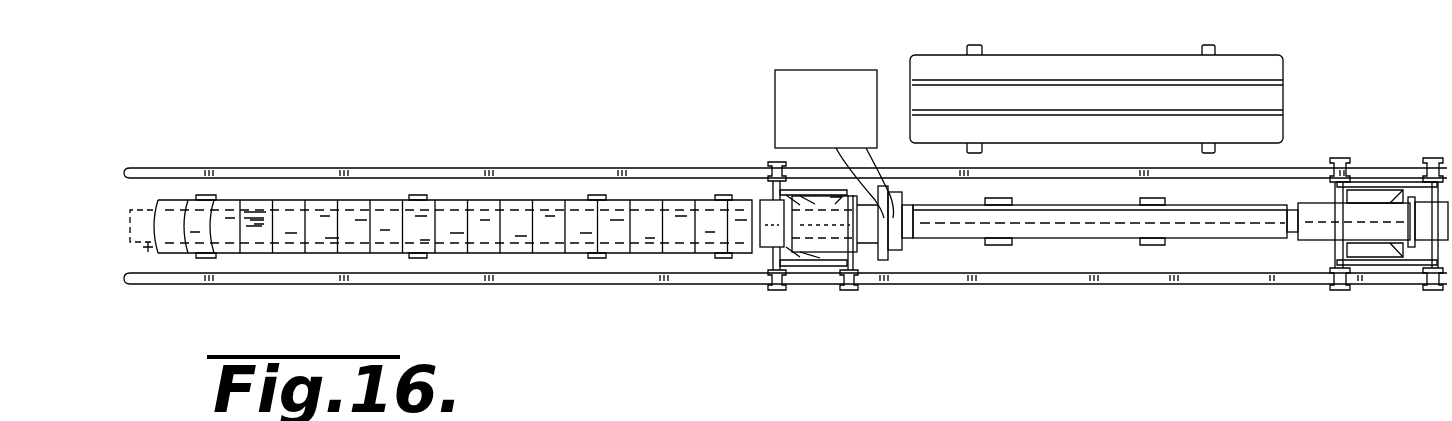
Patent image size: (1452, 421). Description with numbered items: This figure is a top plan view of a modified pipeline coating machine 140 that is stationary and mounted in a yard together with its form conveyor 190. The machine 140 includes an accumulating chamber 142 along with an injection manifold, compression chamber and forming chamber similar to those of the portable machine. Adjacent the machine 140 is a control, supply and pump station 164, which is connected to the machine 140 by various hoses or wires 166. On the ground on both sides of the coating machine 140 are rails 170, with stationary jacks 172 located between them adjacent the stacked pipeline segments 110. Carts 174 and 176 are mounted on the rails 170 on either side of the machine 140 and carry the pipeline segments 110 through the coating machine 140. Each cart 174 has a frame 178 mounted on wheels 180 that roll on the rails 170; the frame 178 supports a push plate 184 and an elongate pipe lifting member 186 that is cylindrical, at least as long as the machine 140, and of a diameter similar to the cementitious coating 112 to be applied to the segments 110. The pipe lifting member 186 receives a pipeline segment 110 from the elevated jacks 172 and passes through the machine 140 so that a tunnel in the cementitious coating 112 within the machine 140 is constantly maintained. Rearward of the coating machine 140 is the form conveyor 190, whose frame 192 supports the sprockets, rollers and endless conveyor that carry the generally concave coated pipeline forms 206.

The pipeline segments 110 is at (1283, 98).
The cementitious coating 112 is at (148, 258).
The pipeline coating machine 140 is at (867, 255).
The accumulating chamber 142 is at (903, 328).
The control, supply and pump station 164 is at (826, 109).
The hoses or wires 166 is at (889, 216).
The rails 170 is at (457, 168).
The stationary jacks 172 is at (998, 245).
The cart 174 is at (1384, 198).
The cart 176 is at (765, 197).
The frame 178 is at (1410, 125).
The wheels 180 is at (770, 288).
The push plate 184 is at (777, 243).
The pipe lifting member 186 is at (1317, 243).
The form conveyor 190 is at (253, 210).
The frame 192 is at (415, 262).
The pipeline forms 206 is at (377, 207).